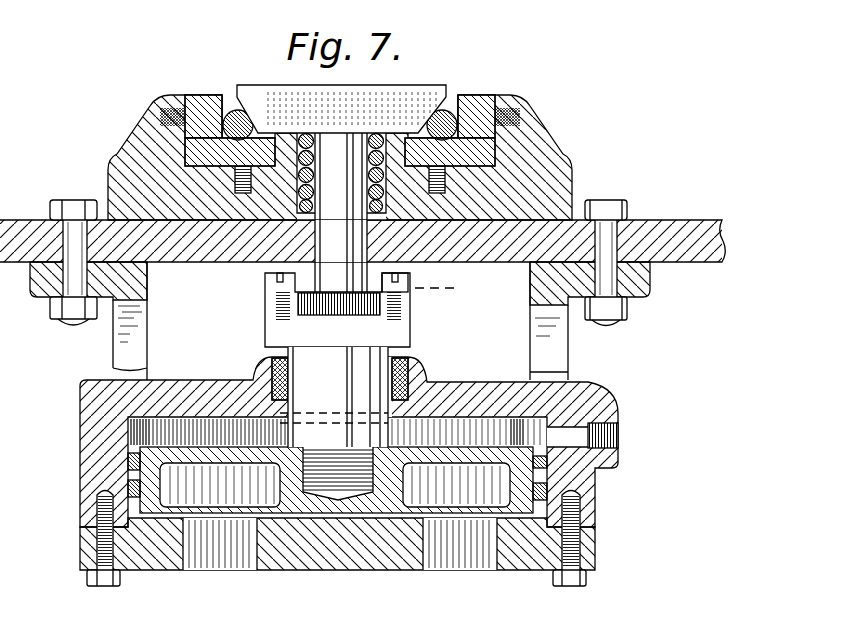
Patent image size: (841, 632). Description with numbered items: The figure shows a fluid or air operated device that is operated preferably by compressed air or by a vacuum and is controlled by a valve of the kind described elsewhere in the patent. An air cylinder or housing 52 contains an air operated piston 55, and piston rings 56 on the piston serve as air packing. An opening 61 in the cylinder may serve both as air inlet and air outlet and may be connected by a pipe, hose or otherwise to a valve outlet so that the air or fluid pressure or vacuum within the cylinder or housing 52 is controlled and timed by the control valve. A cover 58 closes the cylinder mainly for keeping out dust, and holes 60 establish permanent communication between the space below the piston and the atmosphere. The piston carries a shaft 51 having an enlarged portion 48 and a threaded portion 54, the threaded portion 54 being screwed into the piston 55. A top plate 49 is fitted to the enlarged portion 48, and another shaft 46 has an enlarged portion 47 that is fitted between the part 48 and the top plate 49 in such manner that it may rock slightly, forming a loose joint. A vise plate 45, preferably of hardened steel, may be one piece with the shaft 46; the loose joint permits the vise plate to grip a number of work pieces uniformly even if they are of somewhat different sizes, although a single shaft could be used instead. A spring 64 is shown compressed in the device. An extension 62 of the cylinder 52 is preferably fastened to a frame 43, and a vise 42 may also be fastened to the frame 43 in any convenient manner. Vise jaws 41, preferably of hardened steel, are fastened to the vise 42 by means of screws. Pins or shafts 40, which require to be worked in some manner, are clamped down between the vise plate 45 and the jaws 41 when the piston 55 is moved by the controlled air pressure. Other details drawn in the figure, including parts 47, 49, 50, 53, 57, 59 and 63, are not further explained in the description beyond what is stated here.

The pins or shafts 40 is at (234, 111).
The vise jaws 41 is at (218, 152).
The vise 42 is at (157, 157).
The frame 43 is at (8, 233).
The vise plate 45 is at (276, 96).
The shaft 46 is at (324, 205).
The enlarged portion of shaft 47 is at (300, 305).
The enlarged portion of the shaft 48 is at (290, 325).
The top plate 49 is at (412, 277).
The spacer 50 is at (457, 288).
The shaft 51 is at (360, 363).
The air cylinder or housing 52 is at (480, 392).
The packing 53 is at (398, 380).
The threaded portion of the shaft 54 is at (372, 462).
The air operated piston 55 is at (297, 498).
The piston rings 56 is at (133, 490).
The chamber 57 is at (150, 432).
The cover 58 is at (163, 550).
The bolt 59 is at (107, 542).
The holes 60 is at (233, 552).
The air inlet and outlet 61 is at (603, 399).
The extension of cylinder 62 is at (552, 355).
The bolt 63 is at (605, 276).
The spring 64 is at (378, 136).